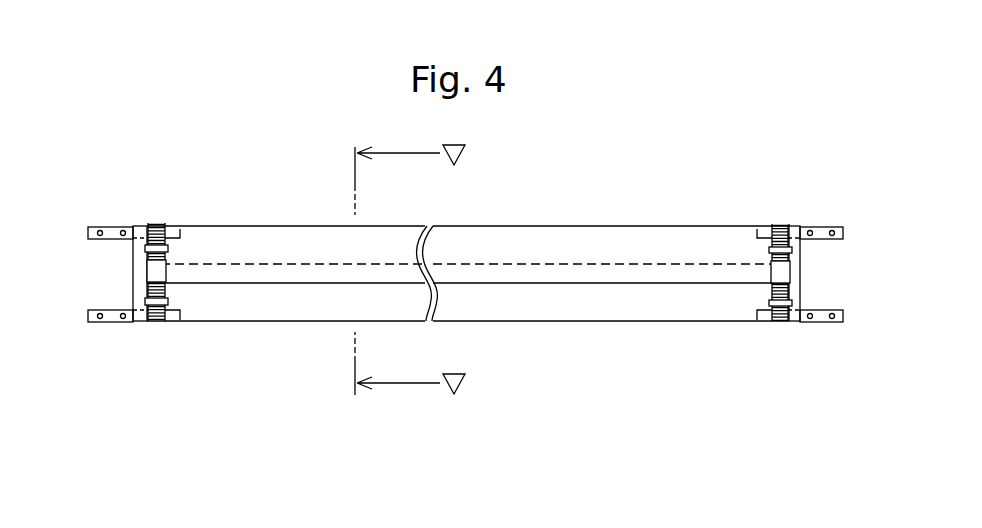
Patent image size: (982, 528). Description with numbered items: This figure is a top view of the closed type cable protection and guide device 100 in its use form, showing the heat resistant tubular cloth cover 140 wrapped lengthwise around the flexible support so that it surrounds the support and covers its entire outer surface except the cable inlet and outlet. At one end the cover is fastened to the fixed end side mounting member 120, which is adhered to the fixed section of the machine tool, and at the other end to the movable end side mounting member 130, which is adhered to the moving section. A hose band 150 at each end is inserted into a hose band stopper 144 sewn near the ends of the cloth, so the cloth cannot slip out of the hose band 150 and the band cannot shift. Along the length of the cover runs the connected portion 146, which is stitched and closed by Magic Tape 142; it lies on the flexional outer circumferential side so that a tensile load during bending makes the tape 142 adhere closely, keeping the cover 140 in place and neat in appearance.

The closed type cable protection and guide device 100 is at (592, 378).
The fixed end side mounting member 120 is at (822, 321).
The movable end side mounting member 130 is at (108, 231).
The heat resistant tubular cloth cover 140 is at (637, 305).
The Magic Tape 142 is at (552, 270).
The hose band stopper 144 is at (168, 250).
The connected portion 146 is at (537, 283).
The hose band 150 is at (150, 272).